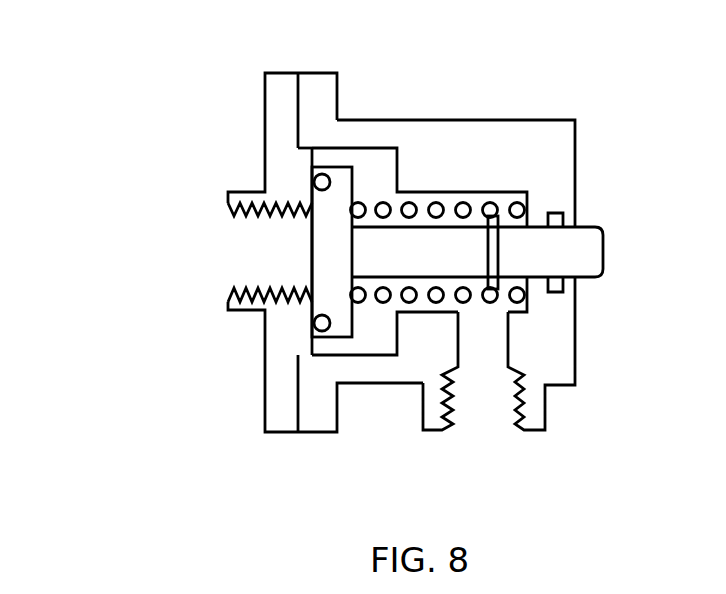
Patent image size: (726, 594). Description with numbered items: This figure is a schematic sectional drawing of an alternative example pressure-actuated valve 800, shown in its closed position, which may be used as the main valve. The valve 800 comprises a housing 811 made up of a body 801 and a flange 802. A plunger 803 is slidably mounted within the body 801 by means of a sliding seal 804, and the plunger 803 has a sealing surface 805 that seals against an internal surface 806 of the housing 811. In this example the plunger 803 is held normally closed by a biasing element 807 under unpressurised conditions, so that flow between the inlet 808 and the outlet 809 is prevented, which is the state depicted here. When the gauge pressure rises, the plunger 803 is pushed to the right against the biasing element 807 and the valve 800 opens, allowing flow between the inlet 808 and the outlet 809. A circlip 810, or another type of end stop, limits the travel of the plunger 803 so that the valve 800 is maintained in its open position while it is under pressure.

The pressure-actuated valve 800 is at (131, 95).
The body 801 is at (490, 120).
The flange 802 is at (279, 102).
The plunger 803 is at (597, 240).
The sliding seal 804 is at (555, 292).
The sealing surface 805 is at (312, 252).
The internal surface 806 is at (316, 181).
The biasing element 807 is at (497, 208).
The inlet 808 is at (482, 417).
The outlet 809 is at (250, 242).
The circlip 810 is at (498, 238).
The housing 811 is at (298, 432).